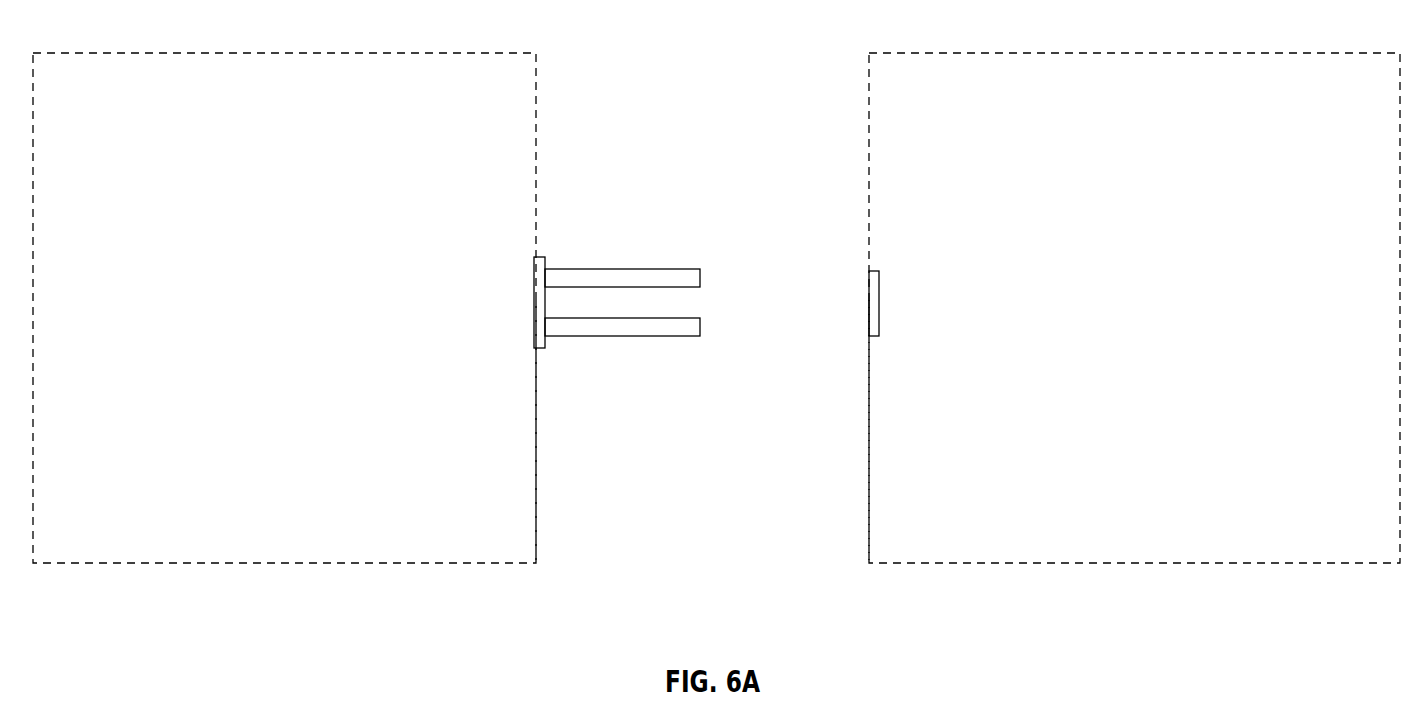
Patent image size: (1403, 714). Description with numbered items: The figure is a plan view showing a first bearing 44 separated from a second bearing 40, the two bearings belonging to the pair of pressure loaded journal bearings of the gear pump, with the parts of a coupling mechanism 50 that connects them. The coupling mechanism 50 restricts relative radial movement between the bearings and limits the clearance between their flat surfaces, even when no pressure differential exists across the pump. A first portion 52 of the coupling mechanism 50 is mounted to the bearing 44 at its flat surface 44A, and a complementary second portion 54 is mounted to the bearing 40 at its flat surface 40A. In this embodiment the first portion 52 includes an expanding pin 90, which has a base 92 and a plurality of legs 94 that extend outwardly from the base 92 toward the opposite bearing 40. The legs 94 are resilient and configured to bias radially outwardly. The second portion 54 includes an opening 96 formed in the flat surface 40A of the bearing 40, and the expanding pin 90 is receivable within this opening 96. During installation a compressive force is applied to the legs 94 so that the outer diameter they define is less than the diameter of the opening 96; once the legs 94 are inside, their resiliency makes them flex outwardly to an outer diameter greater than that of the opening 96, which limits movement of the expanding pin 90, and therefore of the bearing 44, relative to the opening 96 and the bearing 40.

The pressure loaded journal bearing 40 is at (1149, 320).
The flat surface of bearing 40A is at (869, 492).
The pressure loaded journal bearing 44 is at (297, 320).
The flat surface of bearing 44A is at (536, 428).
The coupling mechanism 50 is at (719, 342).
The first portion of coupling mechanism 52 is at (593, 354).
The second portion of coupling mechanism 54 is at (839, 295).
The expanding pin 90 is at (617, 272).
The base 92 is at (546, 262).
The legs 94 is at (644, 318).
The opening 96 is at (873, 270).